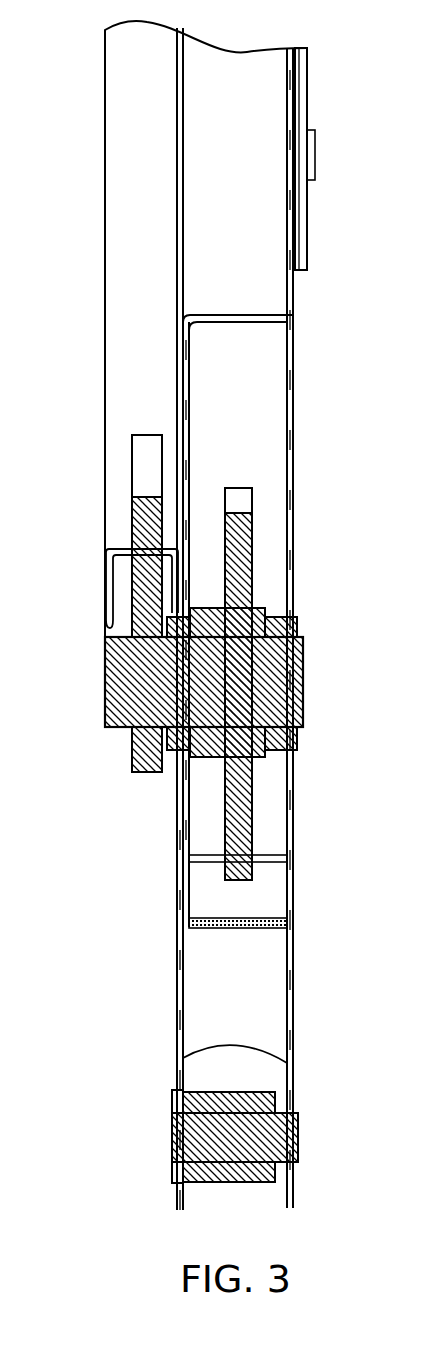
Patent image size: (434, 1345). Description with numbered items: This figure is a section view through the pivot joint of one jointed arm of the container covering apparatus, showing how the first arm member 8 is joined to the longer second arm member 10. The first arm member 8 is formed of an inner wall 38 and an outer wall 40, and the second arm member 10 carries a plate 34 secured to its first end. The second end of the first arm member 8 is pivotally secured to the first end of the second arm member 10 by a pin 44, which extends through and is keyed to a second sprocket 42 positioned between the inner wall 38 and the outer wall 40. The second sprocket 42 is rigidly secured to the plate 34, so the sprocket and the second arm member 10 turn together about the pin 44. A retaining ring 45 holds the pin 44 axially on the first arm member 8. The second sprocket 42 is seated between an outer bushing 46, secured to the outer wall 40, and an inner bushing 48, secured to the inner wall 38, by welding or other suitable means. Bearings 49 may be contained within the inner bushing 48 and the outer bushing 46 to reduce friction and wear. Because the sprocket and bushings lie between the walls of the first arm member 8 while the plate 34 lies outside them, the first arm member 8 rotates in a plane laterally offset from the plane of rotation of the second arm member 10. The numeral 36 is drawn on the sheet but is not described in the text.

The second arm member 10 is at (105, 403).
The first arm member 8 is at (177, 975).
The inner wall 38 is at (293, 1015).
The rod end 36 is at (118, 442).
The plate 34 is at (132, 514).
The second sprocket 42 is at (242, 545).
The outer bushing 46 is at (167, 616).
The inner bushing 48 is at (297, 606).
The bearings 49 is at (195, 638).
The pin 44 is at (293, 687).
The retaining ring 45 is at (293, 737).
The outer wall 40 is at (183, 1053).